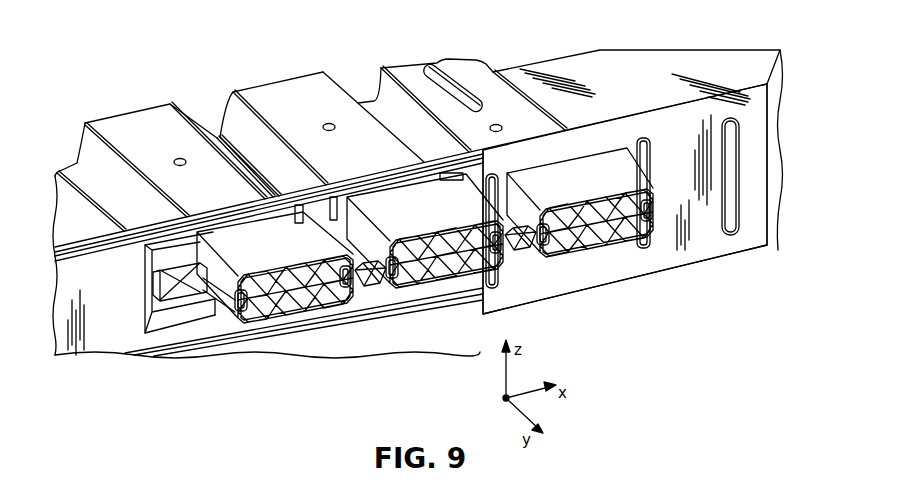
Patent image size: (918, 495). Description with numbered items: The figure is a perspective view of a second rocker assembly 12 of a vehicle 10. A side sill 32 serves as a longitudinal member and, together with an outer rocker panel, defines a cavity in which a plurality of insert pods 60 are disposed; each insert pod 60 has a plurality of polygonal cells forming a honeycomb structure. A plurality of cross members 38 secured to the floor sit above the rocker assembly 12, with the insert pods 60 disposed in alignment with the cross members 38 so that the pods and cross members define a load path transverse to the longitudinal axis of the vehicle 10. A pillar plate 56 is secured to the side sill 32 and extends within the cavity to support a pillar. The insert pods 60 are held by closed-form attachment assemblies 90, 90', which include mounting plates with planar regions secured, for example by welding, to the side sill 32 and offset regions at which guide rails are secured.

The vehicle 10 is at (645, 50).
The rocker assembly 12 is at (716, 277).
The side sill 32 is at (107, 337).
The cross member 38 is at (140, 111).
The pillar plate 56 is at (652, 265).
The insert pod 60 is at (283, 322).
The closed-form attachment assembly 90 is at (372, 322).
The connector 90' is at (373, 325).